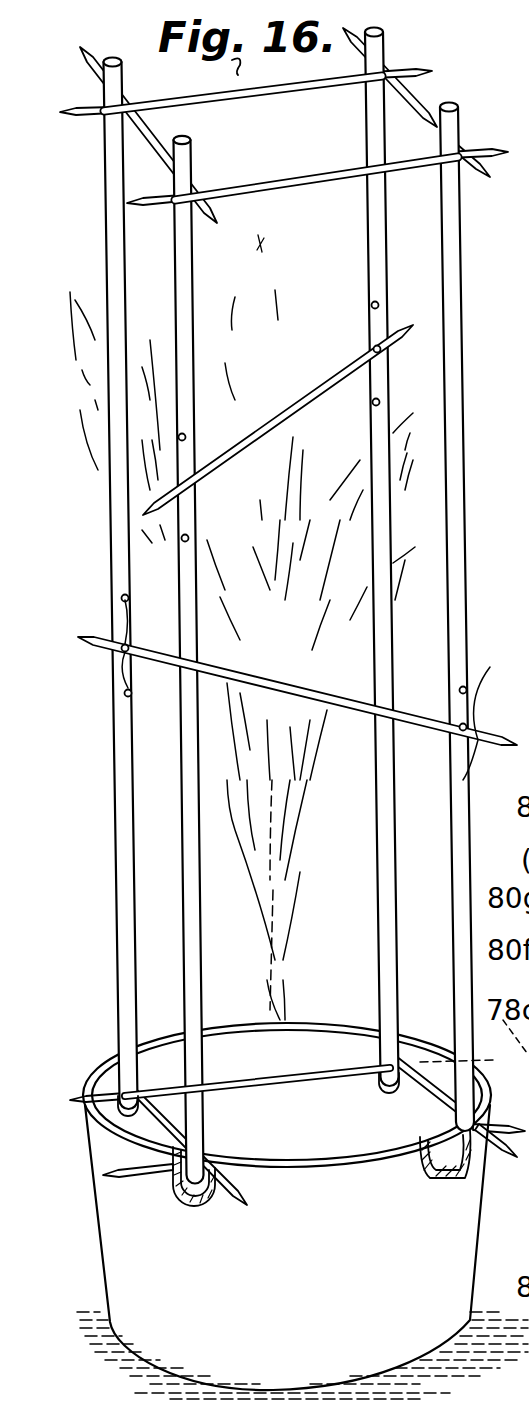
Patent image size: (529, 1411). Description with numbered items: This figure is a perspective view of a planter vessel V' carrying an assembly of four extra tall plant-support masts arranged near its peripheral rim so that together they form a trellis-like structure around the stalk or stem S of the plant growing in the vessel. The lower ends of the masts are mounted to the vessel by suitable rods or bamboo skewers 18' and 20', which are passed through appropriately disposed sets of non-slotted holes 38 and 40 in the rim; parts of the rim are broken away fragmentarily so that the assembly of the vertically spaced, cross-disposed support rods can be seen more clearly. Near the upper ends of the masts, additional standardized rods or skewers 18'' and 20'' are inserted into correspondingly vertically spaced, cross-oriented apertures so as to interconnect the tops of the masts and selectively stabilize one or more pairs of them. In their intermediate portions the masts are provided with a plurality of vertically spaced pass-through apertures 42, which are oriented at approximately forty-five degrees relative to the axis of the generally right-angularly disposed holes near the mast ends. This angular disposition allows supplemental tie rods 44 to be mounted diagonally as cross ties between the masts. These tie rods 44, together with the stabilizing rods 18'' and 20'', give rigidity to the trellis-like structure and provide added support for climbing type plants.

The stabilizing rod 18'' is at (287, 125).
The stabilizing rod 20'' is at (281, 150).
The pass-through aperture 42 is at (370, 305).
The supplemental tie rod 44 is at (300, 402).
The stalk or stem S is at (300, 872).
The non-slotted hole 38 is at (97, 1040).
The non-slotted hole 40 is at (430, 1042).
The rod or bamboo skewer 18' is at (297, 1124).
The rod or bamboo skewer 20' is at (267, 1141).
The planter vessel V' is at (302, 1211).